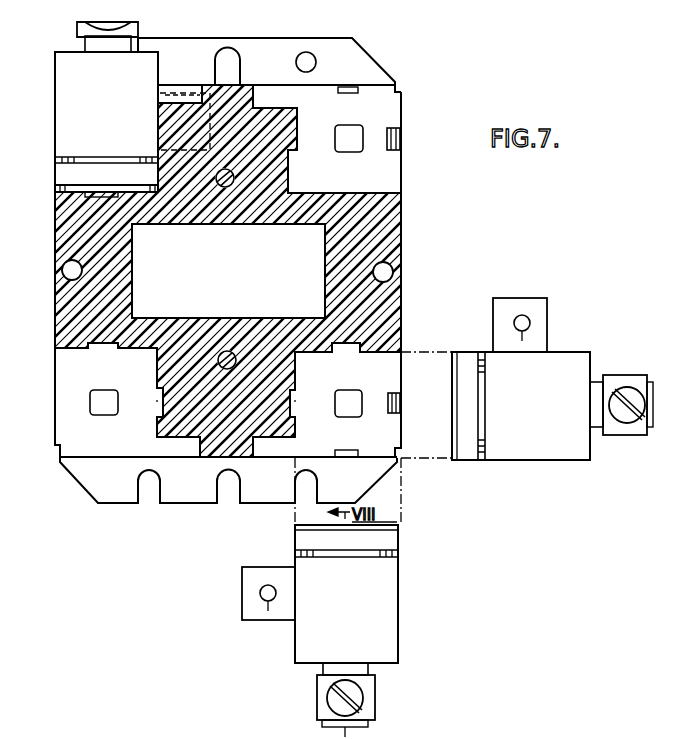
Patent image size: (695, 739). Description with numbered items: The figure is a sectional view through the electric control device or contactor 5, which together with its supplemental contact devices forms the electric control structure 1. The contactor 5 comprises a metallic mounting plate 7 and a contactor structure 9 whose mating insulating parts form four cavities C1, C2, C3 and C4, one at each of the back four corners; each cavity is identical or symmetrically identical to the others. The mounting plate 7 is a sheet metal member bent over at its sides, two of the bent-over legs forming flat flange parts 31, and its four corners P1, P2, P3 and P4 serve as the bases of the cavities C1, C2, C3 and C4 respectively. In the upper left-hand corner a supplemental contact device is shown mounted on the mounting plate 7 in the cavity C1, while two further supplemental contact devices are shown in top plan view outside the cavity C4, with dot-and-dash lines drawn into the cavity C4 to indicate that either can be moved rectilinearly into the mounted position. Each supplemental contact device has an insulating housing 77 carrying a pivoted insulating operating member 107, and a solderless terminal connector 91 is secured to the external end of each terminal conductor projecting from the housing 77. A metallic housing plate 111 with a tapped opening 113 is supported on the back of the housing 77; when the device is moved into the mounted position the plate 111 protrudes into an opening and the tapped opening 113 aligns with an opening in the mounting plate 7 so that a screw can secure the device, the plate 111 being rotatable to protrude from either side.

The electric control structure 1 is at (474, 82).
The electric control device 5 is at (454, 214).
The mounting plate 7 is at (396, 181).
The contactor structure 9 is at (400, 248).
The flat flange part 31 is at (366, 58).
The insulating housing 77 is at (72, 116).
The solderless terminal connector 91 is at (135, 30).
The insulating operating member 107 is at (70, 170).
The metallic housing plate 111 is at (540, 306).
The tapped opening 113 is at (522, 318).
The cavity C1 is at (162, 101).
The cavity C2 is at (332, 134).
The cavity C3 is at (140, 422).
The cavity C4 is at (313, 422).
The corner of mounting plate P1 is at (60, 188).
The corner of mounting plate P2 is at (392, 113).
The corner of mounting plate P3 is at (70, 378).
The corner of mounting plate P4 is at (388, 367).